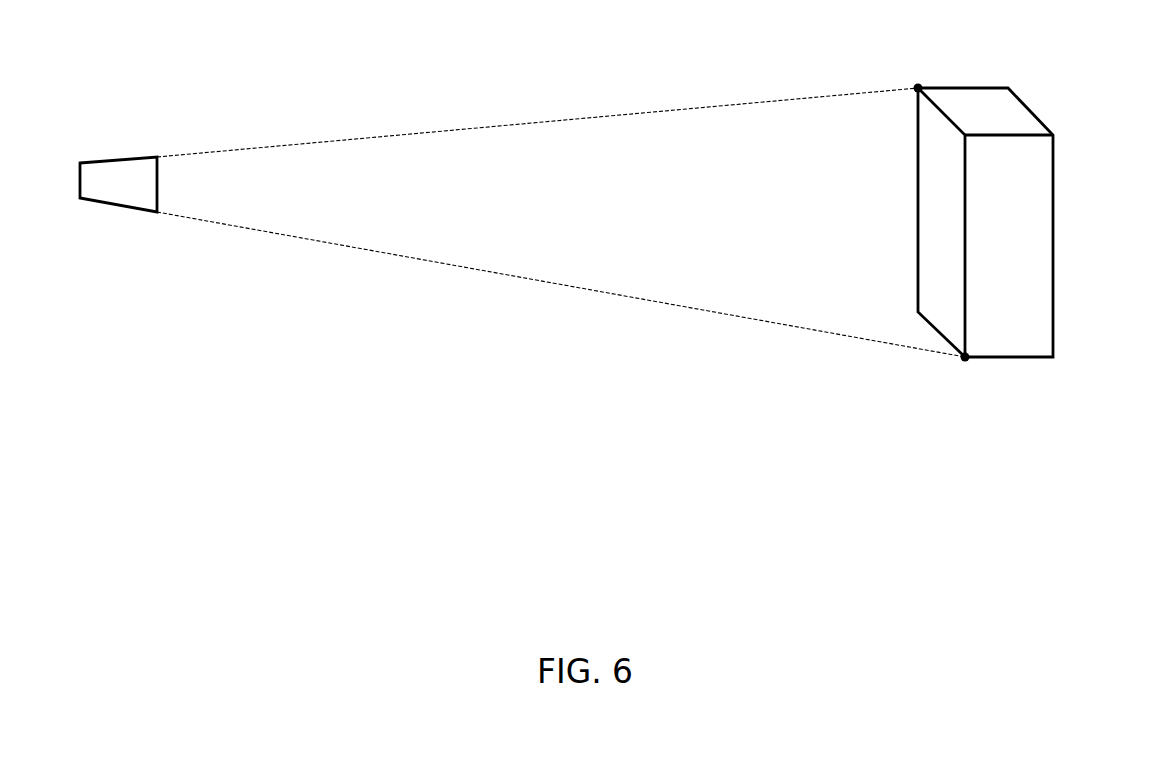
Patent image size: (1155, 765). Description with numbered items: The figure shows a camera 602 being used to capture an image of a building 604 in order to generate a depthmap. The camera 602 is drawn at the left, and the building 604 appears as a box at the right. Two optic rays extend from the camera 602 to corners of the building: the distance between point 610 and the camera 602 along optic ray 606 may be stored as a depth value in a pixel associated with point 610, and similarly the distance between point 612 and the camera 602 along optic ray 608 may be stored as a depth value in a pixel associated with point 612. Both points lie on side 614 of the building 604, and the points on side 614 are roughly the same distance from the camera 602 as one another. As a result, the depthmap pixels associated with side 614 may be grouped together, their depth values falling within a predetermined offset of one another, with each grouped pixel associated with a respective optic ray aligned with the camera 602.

The camera 602 is at (102, 192).
The building 604 is at (1070, 405).
The optic ray 606 is at (422, 258).
The optic ray 608 is at (357, 140).
The point 610 is at (965, 357).
The point 612 is at (918, 88).
The side 614 is at (935, 305).